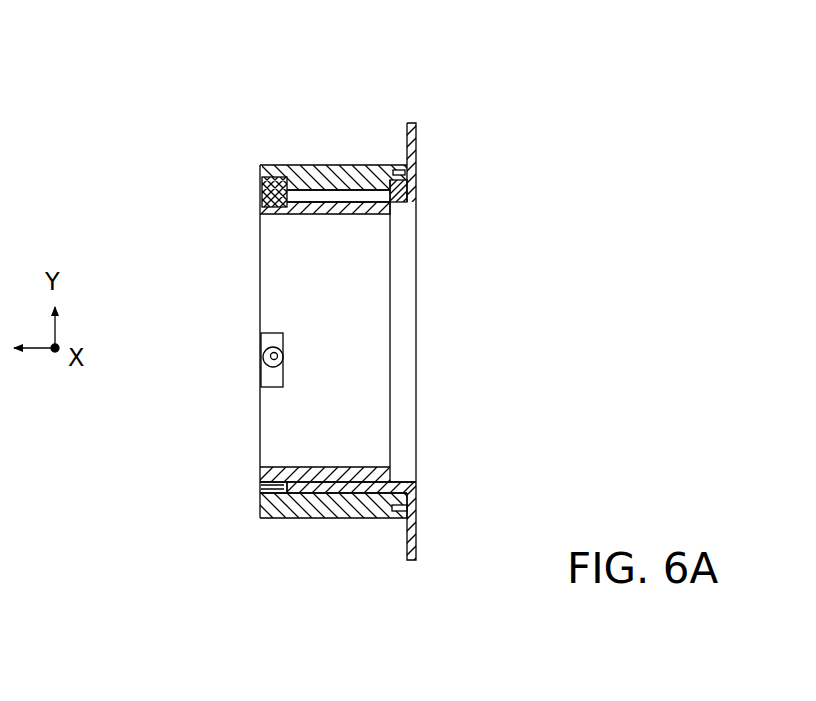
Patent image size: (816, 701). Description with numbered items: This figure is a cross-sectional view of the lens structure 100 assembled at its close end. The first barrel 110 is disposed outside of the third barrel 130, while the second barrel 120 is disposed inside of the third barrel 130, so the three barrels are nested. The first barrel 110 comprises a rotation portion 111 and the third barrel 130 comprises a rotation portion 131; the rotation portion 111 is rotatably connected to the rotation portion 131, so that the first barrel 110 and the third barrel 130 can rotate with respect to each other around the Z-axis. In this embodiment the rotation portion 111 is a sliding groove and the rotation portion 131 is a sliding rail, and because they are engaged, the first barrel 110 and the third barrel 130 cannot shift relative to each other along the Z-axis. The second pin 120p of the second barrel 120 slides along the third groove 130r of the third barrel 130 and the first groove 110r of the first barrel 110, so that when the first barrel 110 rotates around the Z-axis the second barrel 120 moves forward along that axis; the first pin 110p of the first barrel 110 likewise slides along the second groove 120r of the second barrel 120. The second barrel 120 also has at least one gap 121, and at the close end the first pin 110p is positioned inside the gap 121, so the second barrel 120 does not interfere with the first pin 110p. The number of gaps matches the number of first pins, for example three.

The camera module 100 is at (149, 66).
The first barrel 110 is at (297, 165).
The first groove 110r is at (276, 190).
The first pin 110p is at (265, 355).
The rotation portion 111 is at (394, 186).
The second barrel 120 is at (263, 206).
The second pin 120p is at (271, 189).
The second groove 120r is at (303, 467).
The gap 121 is at (271, 335).
The third barrel 130 is at (418, 128).
The third groove 130r is at (353, 193).
The rotation portion 131 is at (402, 173).